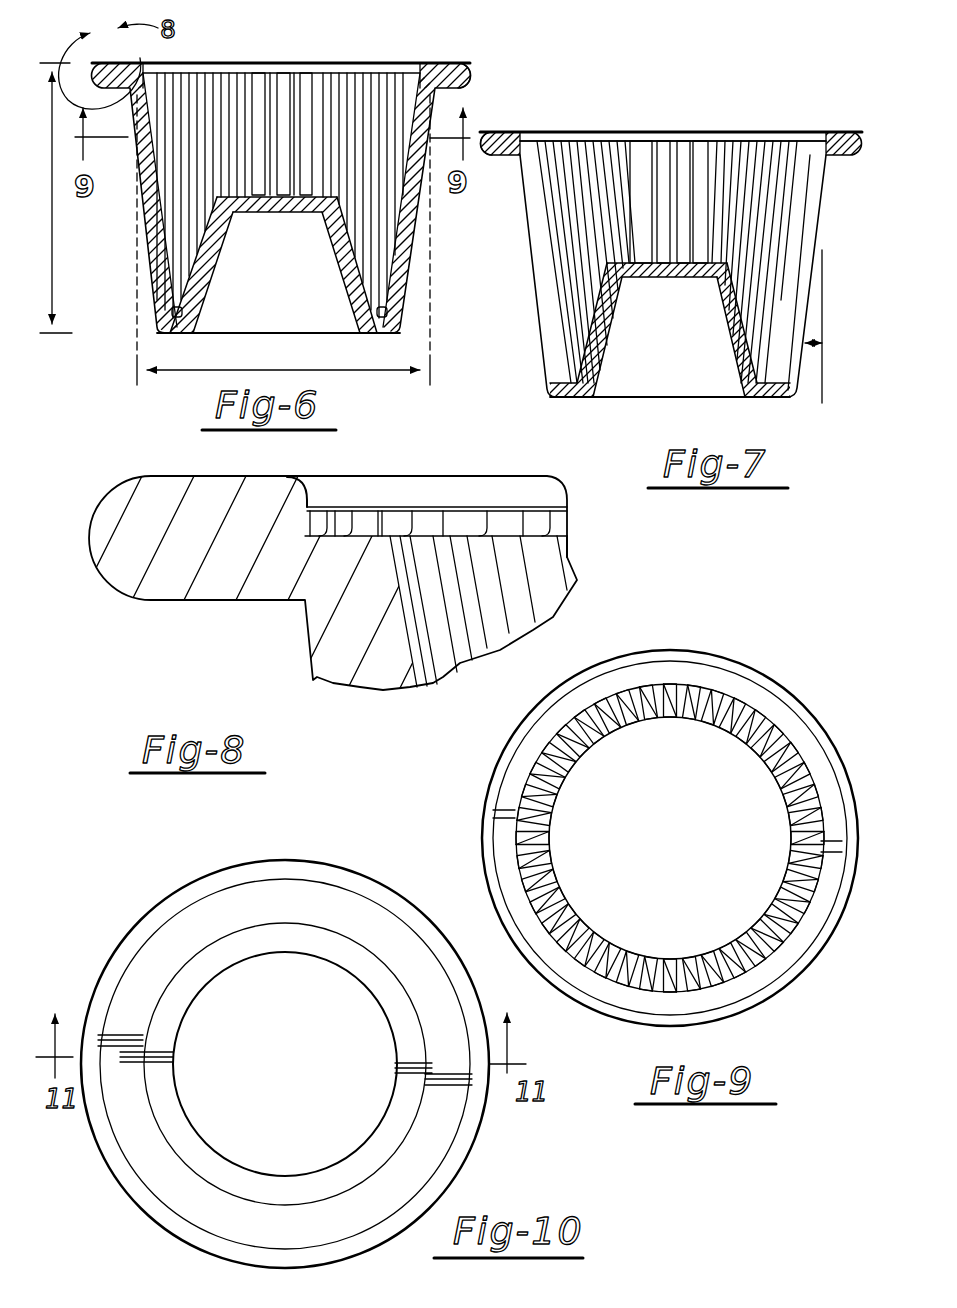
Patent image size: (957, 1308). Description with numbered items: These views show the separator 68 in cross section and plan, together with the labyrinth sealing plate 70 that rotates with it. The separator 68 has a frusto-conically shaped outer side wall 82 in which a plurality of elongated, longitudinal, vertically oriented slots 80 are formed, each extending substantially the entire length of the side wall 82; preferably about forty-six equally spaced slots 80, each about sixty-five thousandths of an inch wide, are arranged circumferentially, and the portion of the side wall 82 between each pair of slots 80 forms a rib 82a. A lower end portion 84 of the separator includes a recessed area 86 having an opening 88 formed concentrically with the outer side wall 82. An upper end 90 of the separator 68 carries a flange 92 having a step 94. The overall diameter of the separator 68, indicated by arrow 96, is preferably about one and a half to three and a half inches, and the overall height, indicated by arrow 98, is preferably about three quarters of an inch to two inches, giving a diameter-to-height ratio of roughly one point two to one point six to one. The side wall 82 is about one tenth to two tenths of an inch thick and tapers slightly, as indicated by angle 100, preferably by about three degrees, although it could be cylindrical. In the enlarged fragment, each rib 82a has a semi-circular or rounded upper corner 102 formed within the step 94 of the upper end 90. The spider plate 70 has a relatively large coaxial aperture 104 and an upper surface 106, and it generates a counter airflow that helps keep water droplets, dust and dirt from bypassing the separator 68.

In FIG. 6, the separator 68 is at (140, 288).
In FIG. 7, the separator 68 is at (724, 127).
In FIG. 8, the separator 68 is at (153, 634).
In FIG. 9, the separator 68 is at (470, 857).
In FIG. 10, the labyrinth sealing plate 70 is at (86, 970).
In FIG. 6, the slots 80 is at (300, 170).
In FIG. 7, the slots 80 is at (537, 268).
In FIG. 8, the slots 80 is at (372, 527).
In FIG. 9, the slots 80 is at (656, 697).
In FIG. 6, the outer side wall 82 is at (145, 172).
In FIG. 8, the rib 82a is at (567, 554).
In FIG. 9, the rib 82a is at (735, 713).
In FIG. 6, the lower end portion 84 is at (177, 330).
In FIG. 7, the lower end portion 84 is at (583, 388).
In FIG. 6, the recessed area 86 is at (345, 283).
In FIG. 7, the recessed area 86 is at (742, 357).
In FIG. 6, the opening 88 is at (258, 202).
In FIG. 7, the opening 88 is at (700, 276).
In FIG. 6, the upper end 90 is at (105, 60).
In FIG. 7, the upper end 90 is at (856, 127).
In FIG. 8, the upper end 90 is at (82, 511).
In FIG. 6, the flange 92 is at (466, 69).
In FIG. 7, the flange 92 is at (492, 157).
In FIG. 9, the flange 92 is at (800, 736).
In FIG. 6, the step 94 is at (428, 70).
In FIG. 7, the step 94 is at (520, 134).
In FIG. 8, the step 94 is at (305, 476).
In FIG. 6, the overall diameter arrow 96 is at (368, 372).
In FIG. 6, the overall height arrow 98 is at (52, 300).
In FIG. 7, the taper angle 100 is at (823, 377).
In FIG. 8, the semi-circular upper corner 102 is at (540, 520).
In FIG. 10, the aperture 104 is at (310, 958).
In FIG. 10, the upper surface 106 is at (289, 907).